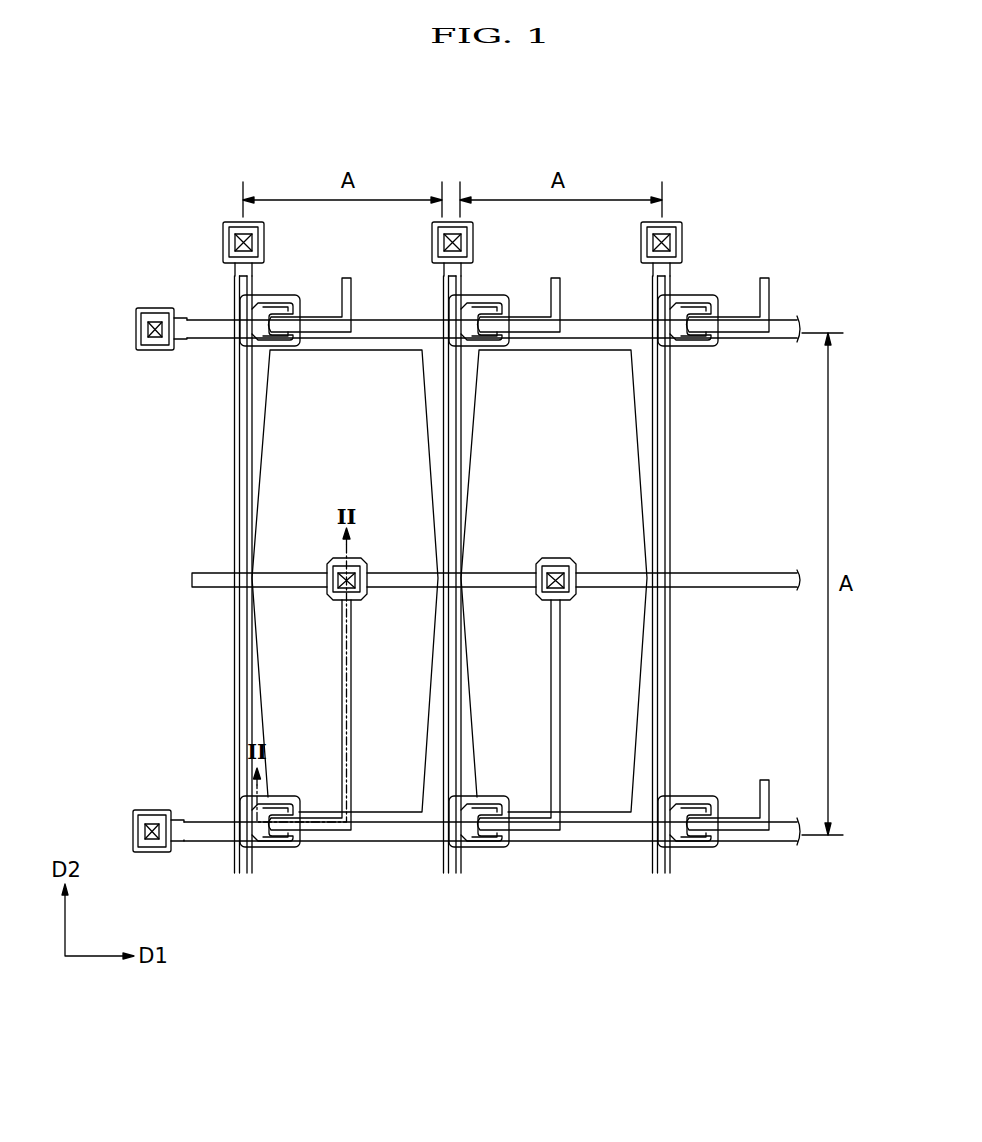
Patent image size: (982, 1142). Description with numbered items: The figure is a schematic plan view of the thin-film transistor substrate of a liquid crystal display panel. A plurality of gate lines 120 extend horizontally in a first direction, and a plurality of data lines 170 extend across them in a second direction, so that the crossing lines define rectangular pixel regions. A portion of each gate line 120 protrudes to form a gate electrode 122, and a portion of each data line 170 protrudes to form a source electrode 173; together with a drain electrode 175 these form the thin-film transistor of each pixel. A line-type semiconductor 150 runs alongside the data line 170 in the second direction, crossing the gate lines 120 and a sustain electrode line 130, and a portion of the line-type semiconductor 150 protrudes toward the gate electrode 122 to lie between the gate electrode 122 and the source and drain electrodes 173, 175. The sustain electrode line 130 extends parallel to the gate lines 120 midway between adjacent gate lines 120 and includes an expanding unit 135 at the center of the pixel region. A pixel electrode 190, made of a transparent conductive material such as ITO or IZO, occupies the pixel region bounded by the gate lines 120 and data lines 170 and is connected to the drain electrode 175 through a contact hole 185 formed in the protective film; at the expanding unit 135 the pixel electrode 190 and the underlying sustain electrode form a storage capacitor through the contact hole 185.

The gate line 120 is at (207, 340).
The gate electrode 122 is at (254, 850).
The sustain electrode line 130 is at (192, 578).
The expanding unit 135 is at (360, 560).
The line-type semiconductor 150 is at (246, 490).
The data line 170 is at (234, 438).
The source electrode 173 is at (268, 852).
The drain electrode 175 is at (283, 852).
The contact hole 185 is at (357, 593).
The pixel electrode 190 is at (386, 800).